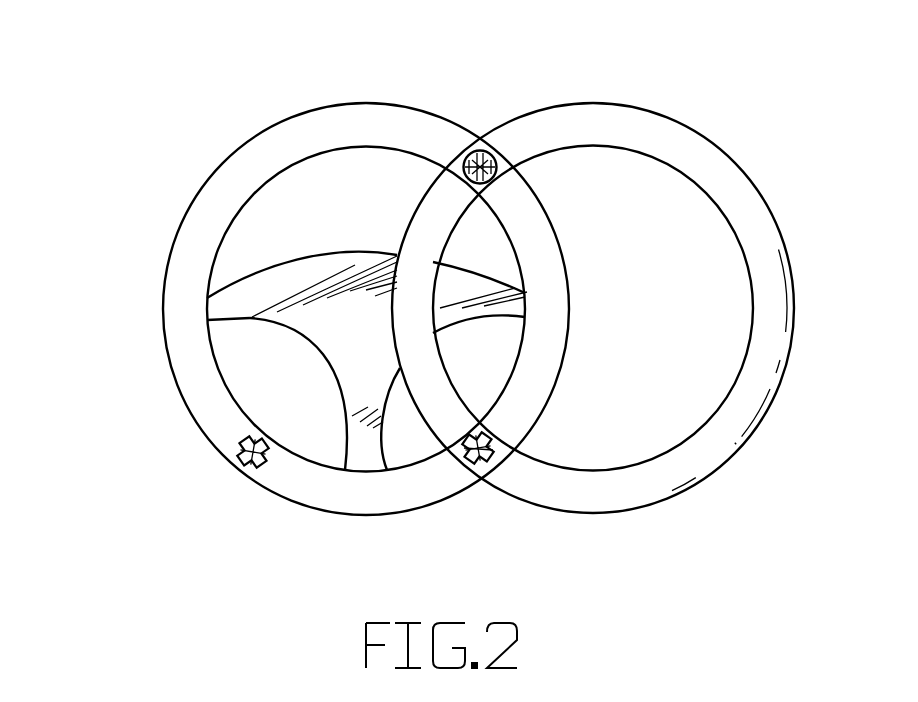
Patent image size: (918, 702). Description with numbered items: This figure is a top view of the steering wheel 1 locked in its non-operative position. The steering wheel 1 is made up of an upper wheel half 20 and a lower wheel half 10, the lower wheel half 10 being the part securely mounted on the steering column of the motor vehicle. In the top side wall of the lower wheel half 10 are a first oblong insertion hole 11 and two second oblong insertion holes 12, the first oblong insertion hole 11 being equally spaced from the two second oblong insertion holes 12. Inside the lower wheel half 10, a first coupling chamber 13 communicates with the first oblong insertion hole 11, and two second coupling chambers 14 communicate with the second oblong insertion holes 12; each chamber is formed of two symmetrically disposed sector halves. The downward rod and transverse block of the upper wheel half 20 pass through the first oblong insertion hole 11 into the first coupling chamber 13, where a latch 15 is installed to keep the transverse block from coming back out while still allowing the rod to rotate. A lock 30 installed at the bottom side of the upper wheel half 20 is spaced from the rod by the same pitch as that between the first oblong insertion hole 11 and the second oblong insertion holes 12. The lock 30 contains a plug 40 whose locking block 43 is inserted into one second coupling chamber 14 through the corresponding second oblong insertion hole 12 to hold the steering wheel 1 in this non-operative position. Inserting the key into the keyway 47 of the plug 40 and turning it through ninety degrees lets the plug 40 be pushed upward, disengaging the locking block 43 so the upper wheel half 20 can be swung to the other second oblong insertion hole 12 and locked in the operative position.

The steering wheel 1 is at (413, 89).
The lower wheel half 10 is at (213, 263).
The upper wheel half 20 is at (697, 463).
The lock 30 is at (502, 170).
The plug 40 is at (505, 172).
The locking block 43 is at (492, 150).
The keyway 47 is at (500, 160).
The second oblong insertion hole 12 is at (247, 460).
The second coupling chamber 14 is at (255, 462).
The latch 15 is at (467, 438).
The first oblong insertion hole 11 is at (490, 467).
The first coupling chamber 13 is at (487, 452).